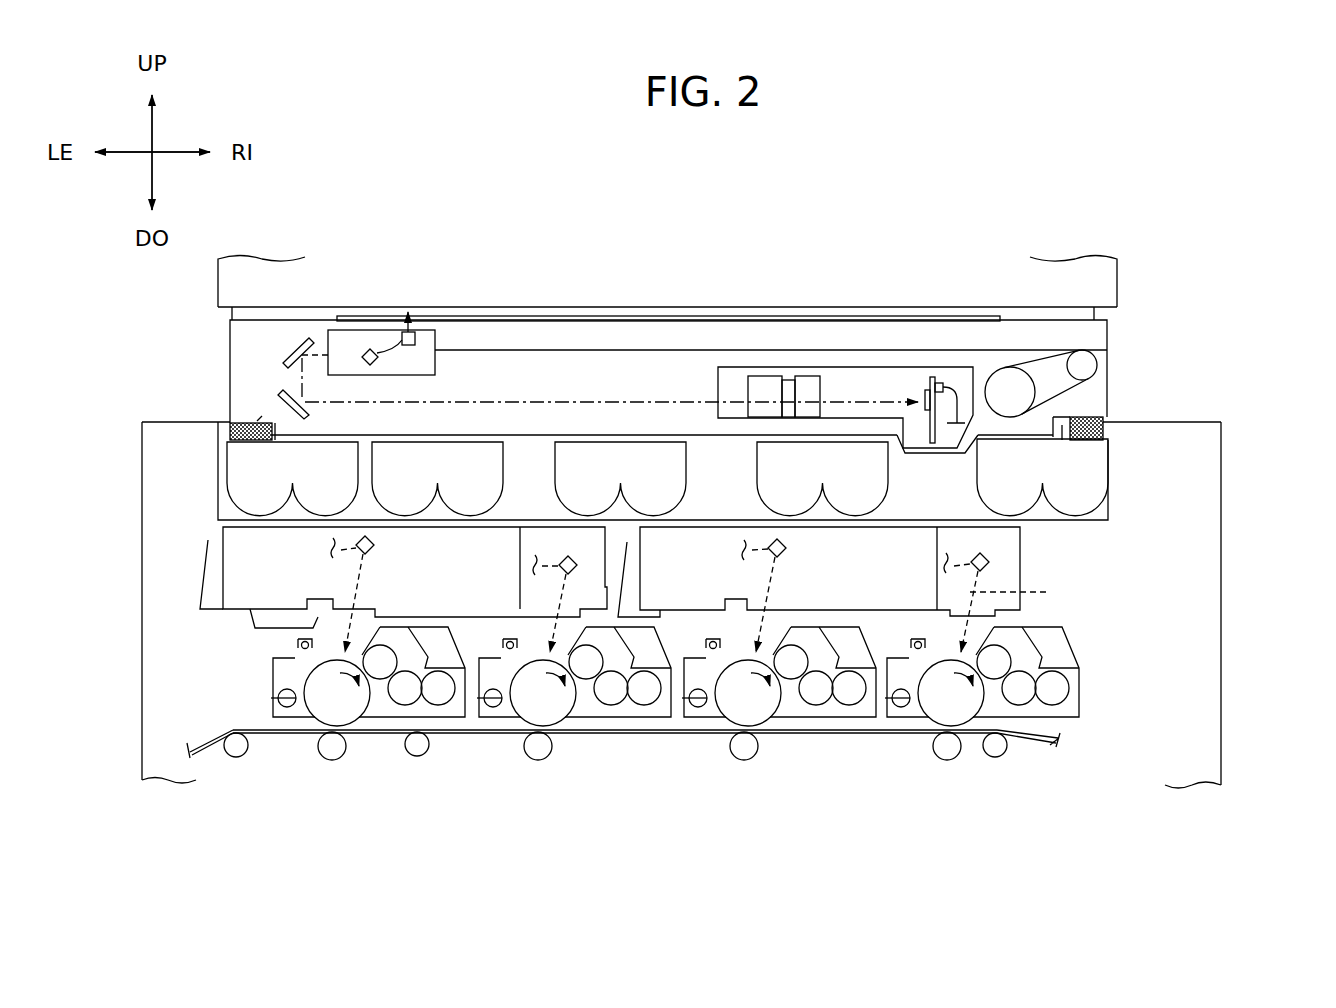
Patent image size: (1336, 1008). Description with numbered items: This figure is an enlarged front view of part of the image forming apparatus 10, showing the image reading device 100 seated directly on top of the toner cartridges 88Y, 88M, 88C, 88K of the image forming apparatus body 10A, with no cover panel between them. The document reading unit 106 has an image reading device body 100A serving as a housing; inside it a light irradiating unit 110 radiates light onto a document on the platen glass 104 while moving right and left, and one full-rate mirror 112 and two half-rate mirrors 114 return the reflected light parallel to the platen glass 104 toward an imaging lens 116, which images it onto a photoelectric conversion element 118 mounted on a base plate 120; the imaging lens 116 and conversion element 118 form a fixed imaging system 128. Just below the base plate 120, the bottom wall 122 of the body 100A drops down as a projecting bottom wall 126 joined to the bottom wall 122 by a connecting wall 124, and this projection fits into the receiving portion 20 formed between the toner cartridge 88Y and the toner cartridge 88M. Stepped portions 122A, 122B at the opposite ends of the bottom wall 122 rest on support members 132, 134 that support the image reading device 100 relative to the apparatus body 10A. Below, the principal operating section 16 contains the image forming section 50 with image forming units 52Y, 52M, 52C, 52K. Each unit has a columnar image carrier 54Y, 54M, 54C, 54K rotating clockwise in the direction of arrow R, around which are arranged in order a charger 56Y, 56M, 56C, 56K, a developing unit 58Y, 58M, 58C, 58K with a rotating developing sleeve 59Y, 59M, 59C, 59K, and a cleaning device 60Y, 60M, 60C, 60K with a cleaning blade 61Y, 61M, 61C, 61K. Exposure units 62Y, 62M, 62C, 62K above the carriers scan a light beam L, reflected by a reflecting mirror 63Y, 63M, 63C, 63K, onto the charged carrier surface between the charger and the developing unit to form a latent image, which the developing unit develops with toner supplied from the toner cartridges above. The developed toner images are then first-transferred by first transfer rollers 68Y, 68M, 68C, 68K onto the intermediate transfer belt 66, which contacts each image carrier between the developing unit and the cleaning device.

The image forming apparatus 10 is at (1075, 184).
The image forming apparatus body 10A is at (1222, 581).
The principal operating section 16 is at (209, 788).
The receiving portion 20 is at (946, 458).
The image forming section 50 is at (214, 692).
The intermediate transfer belt 66 is at (1031, 740).
The image reading device 100 is at (1122, 268).
The image reading device body 100A is at (1108, 331).
The platen glass 104 is at (550, 315).
The document reading unit 106 is at (1113, 372).
The light irradiating unit 110 is at (416, 338).
The full-rate mirror 112 is at (379, 355).
The half-rate mirror 114 is at (290, 350).
The imaging lens 116 is at (800, 383).
The photoelectric conversion element 118 is at (928, 378).
The base plate 120 is at (948, 386).
The bottom wall 122 is at (297, 442).
The stepped portion 122A is at (255, 435).
The stepped portion 122B is at (1105, 419).
The connecting wall 124 is at (977, 446).
The projecting bottom wall 126 is at (905, 450).
The imaging system 128 is at (840, 357).
The support member 132 is at (258, 420).
The support member 134 is at (1108, 433).
The toner cartridge 88K is at (385, 462).
The toner cartridge 88C is at (607, 456).
The toner cartridge 88M is at (766, 458).
The toner cartridge 88Y is at (1092, 465).
The image forming unit 52K is at (462, 646).
The image forming unit 52C is at (673, 645).
The image forming unit 52M is at (868, 647).
The image forming unit 52Y is at (1083, 690).
The image carrier 54K is at (348, 722).
The image carrier 54C is at (554, 722).
The image carrier 54M is at (759, 722).
The image carrier 54Y is at (962, 722).
The charger 56K is at (305, 637).
The charger 56C is at (510, 637).
The charger 56M is at (713, 637).
The charger 56Y is at (918, 637).
The developing unit 58K is at (450, 627).
The developing unit 58C is at (651, 627).
The developing unit 58M is at (856, 627).
The developing unit 58Y is at (1076, 656).
The developing sleeve 59K is at (381, 676).
The developing sleeve 59C is at (587, 676).
The developing sleeve 59M is at (792, 676).
The developing sleeve 59Y is at (996, 660).
The cleaning device 60K is at (280, 703).
The cleaning device 60C is at (486, 703).
The cleaning device 60M is at (691, 703).
The cleaning device 60Y is at (894, 703).
The cleaning blade 61K is at (300, 720).
The cleaning blade 61C is at (506, 720).
The cleaning blade 61M is at (711, 720).
The cleaning blade 61Y is at (914, 720).
The exposure unit 62K is at (399, 543).
The exposure unit 62C is at (547, 543).
The exposure unit 62M is at (738, 540).
The exposure unit 62Y is at (1022, 560).
The reflecting mirror 63K is at (369, 594).
The reflecting mirror 63C is at (571, 558).
The reflecting mirror 63M is at (779, 541).
The reflecting mirror 63Y is at (990, 560).
The first transfer roller 68K is at (332, 752).
The first transfer roller 68C is at (538, 752).
The first transfer roller 68M is at (744, 752).
The first transfer roller 68Y is at (947, 752).
The light beam L is at (1019, 592).